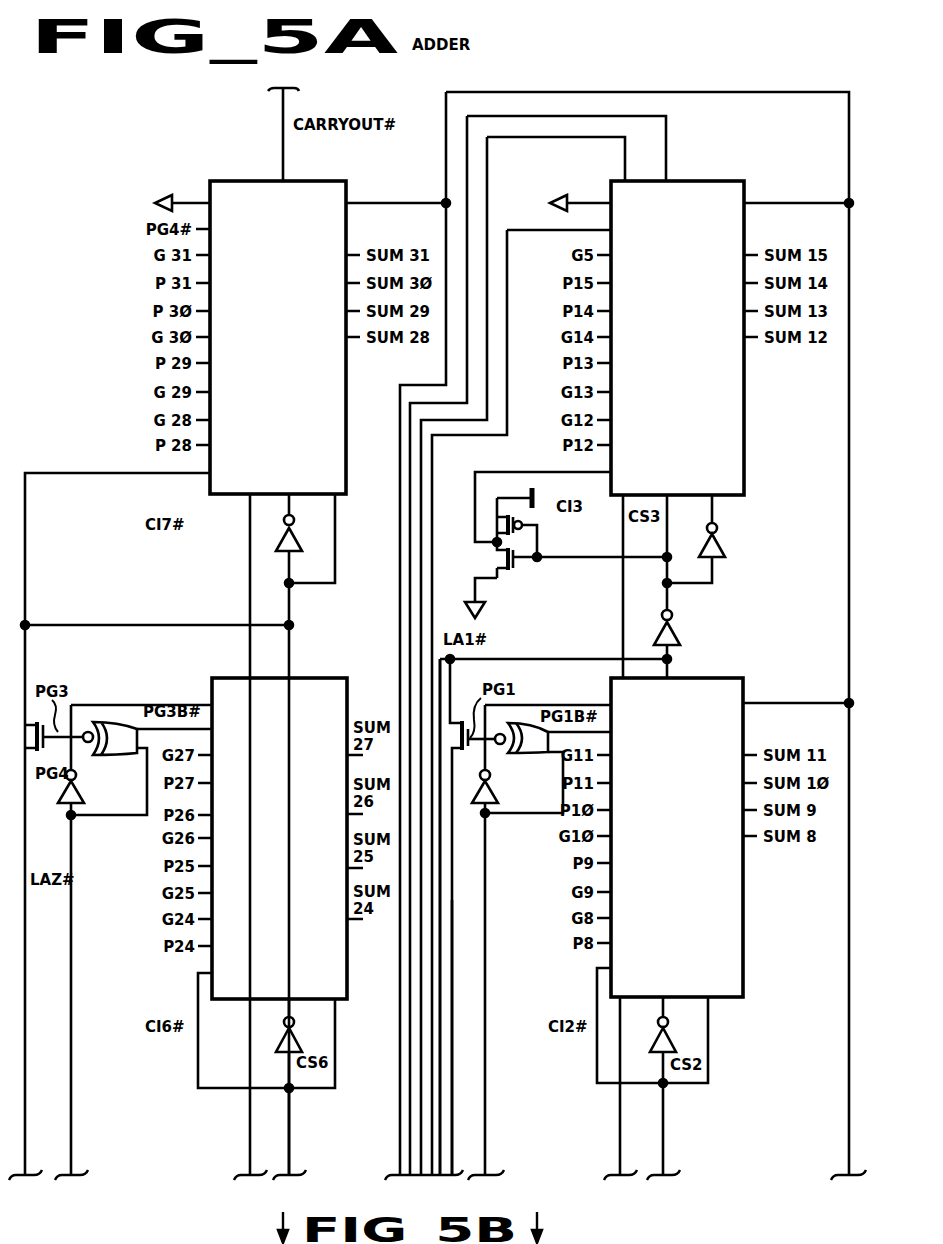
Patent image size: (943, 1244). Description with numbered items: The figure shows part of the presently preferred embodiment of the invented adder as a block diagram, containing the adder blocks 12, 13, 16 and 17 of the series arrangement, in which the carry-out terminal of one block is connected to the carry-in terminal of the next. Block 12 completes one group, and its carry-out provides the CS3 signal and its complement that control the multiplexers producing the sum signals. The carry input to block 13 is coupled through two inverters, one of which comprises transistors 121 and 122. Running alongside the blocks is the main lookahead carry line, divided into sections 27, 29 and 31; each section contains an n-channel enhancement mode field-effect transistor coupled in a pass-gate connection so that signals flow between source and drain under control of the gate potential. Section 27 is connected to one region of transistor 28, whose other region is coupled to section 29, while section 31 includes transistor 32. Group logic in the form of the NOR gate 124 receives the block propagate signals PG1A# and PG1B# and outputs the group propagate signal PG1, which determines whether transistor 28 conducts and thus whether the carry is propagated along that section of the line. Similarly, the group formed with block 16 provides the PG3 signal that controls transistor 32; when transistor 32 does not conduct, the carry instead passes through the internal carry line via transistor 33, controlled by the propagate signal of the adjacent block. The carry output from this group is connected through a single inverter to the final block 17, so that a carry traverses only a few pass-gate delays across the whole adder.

The block 12 is at (677, 837).
The block 13 is at (677, 338).
The block 16 is at (279, 838).
The block 17 is at (278, 337).
The transistor 121 is at (492, 560).
The transistor 122 is at (492, 522).
The NOR gate 124 is at (525, 752).
The transistor 28 is at (450, 742).
The transistor 32 is at (24, 736).
The section 27 is at (453, 966).
The section 29 is at (442, 866).
The section 31 is at (28, 975).
The transistor 33 is at (50, 650).